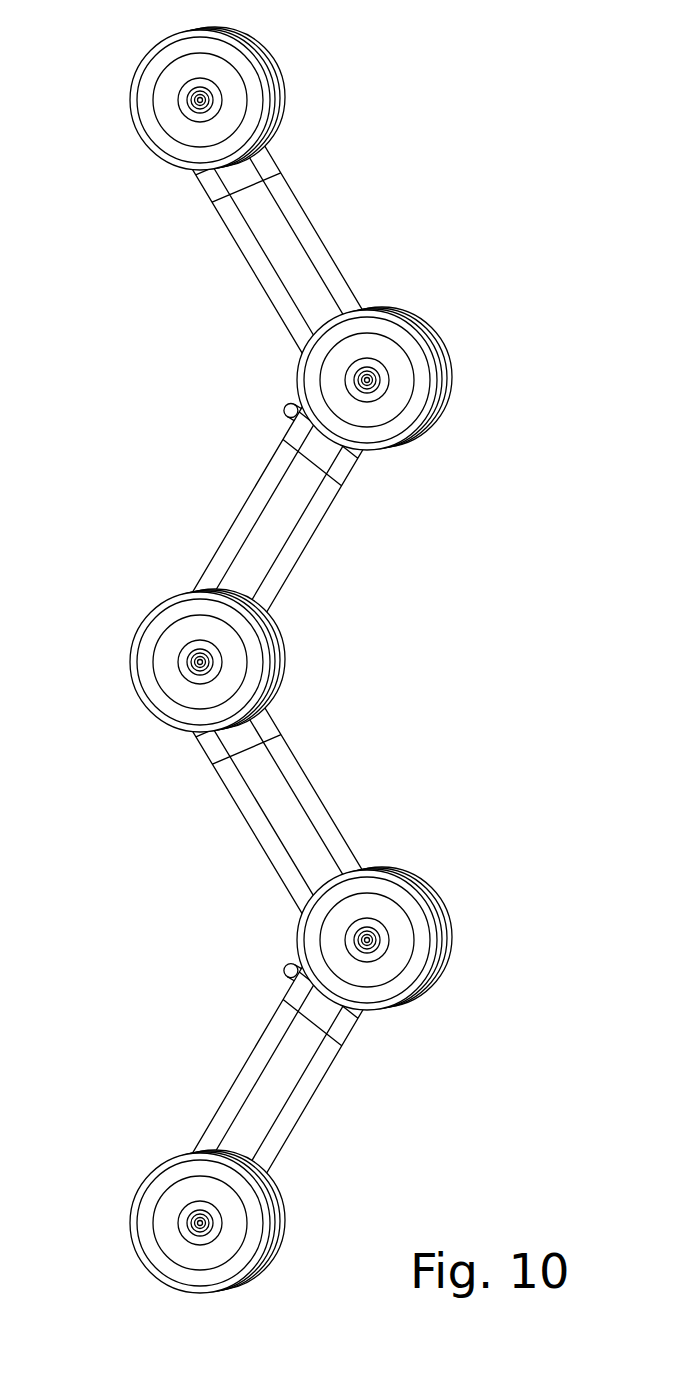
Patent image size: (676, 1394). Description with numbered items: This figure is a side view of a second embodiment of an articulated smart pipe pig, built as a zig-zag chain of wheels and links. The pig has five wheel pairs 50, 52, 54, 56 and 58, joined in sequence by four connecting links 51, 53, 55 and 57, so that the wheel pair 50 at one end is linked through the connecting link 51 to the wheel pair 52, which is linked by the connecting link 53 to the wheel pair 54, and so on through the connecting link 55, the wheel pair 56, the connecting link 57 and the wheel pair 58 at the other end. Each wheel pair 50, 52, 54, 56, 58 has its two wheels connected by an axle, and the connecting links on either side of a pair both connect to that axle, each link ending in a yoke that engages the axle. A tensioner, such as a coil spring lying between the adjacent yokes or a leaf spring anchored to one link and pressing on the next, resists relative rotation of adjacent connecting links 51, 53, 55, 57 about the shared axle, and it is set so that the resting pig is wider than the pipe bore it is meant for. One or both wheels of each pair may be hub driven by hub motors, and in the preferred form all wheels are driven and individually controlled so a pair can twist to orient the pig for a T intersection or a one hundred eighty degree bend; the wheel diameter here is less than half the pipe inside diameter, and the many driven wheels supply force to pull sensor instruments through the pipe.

The wheel pair 50 is at (135, 135).
The connecting link 51 is at (259, 275).
The wheel pair 52 is at (452, 350).
The connecting link 53 is at (299, 552).
The wheel pair 54 is at (134, 691).
The connecting link 55 is at (260, 851).
The wheel pair 56 is at (453, 966).
The connecting link 57 is at (304, 1100).
The wheel pair 58 is at (134, 1238).